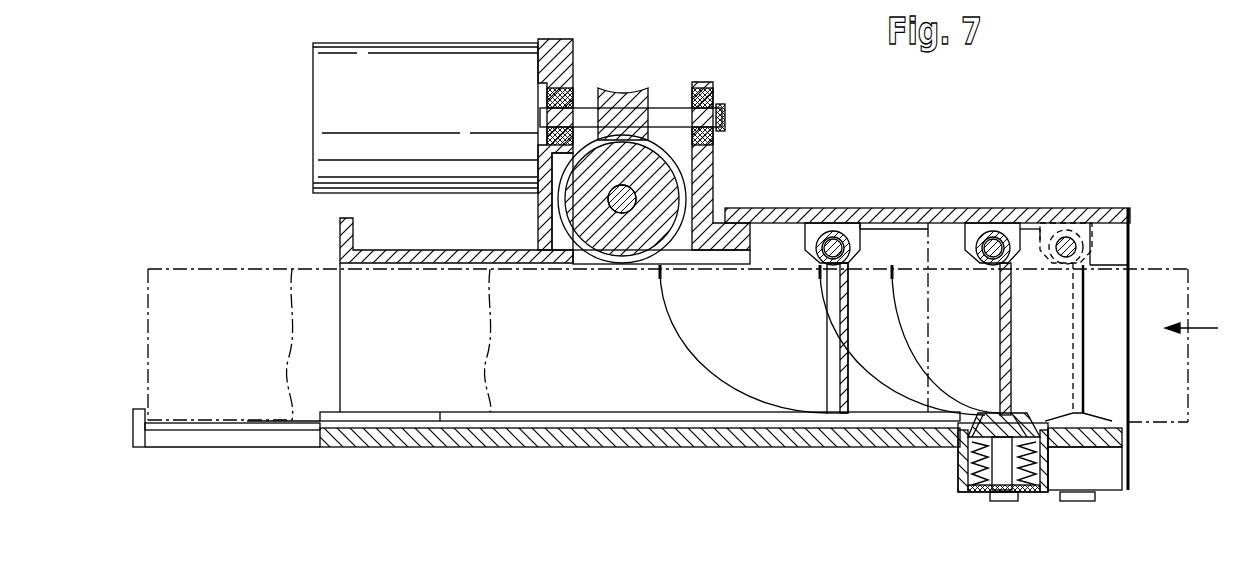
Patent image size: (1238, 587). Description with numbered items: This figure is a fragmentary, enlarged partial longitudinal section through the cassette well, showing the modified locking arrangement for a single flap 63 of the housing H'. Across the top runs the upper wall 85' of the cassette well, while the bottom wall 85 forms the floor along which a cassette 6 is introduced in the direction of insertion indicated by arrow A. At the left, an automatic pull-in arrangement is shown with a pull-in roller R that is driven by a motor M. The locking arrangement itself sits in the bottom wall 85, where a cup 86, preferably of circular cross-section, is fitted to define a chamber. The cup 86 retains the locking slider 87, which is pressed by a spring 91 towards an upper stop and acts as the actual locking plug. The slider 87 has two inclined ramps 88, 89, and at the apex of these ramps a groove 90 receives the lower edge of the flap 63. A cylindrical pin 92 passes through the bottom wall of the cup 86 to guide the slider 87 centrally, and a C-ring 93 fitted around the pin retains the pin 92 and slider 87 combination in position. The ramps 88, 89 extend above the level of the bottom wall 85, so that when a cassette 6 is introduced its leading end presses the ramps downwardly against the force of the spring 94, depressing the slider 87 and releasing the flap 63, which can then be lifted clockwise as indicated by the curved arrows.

The motor M is at (436, 108).
The pull-in roller R is at (677, 177).
The upper wall of the cassette well 85' is at (927, 188).
The flap 63 is at (1011, 322).
The locking slider 87 is at (1065, 418).
The housing H' is at (335, 452).
The bottom wall 85 is at (684, 455).
The cup 86 is at (954, 456).
The groove 90 is at (1000, 413).
The inclined ramp 89 is at (1013, 415).
The inclined ramp 88 is at (983, 415).
The spring 94 is at (967, 460).
The cylindrical pin 92 is at (1027, 489).
The spring 91 is at (987, 487).
The C-ring 93 is at (1023, 493).
The cassette 6 is at (1153, 426).
The direction of insertion arrow A is at (1206, 326).